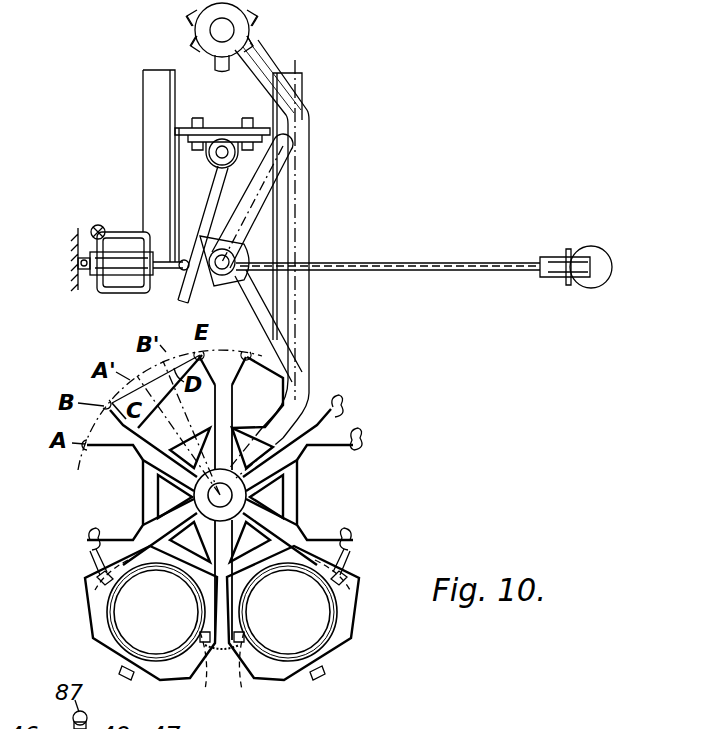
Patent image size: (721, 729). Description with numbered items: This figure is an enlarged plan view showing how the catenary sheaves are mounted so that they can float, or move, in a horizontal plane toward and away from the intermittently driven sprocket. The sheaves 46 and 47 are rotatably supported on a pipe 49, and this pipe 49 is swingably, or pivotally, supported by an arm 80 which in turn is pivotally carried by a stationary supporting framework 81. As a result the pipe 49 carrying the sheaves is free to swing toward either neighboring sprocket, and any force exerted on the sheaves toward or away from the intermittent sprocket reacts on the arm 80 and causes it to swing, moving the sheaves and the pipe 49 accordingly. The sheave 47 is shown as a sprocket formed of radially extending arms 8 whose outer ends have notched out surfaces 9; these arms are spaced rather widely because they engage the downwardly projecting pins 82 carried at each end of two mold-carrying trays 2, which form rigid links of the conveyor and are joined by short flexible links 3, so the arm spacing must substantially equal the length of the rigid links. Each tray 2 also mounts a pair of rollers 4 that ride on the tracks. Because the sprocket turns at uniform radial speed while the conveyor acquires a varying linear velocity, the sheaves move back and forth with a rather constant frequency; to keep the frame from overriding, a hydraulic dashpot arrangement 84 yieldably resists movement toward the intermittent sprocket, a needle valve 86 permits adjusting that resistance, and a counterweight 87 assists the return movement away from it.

The mold-carrying tray 2 is at (347, 608).
The flexible link 3 is at (222, 646).
The roller 4 is at (336, 676).
The radially extending arm 8 is at (353, 492).
The notched out surface 9 is at (86, 542).
The sheave 46 is at (250, 28).
The sheave 47 is at (296, 494).
The pipe 49 is at (302, 233).
The arm 80 is at (220, 187).
The stationary supporting framework 81 is at (222, 132).
The downwardly projecting pin 82 is at (350, 598).
The hydraulic dashpot arrangement 84 is at (99, 287).
The needle valve 86 is at (100, 224).
The counterweight 87 is at (602, 288).